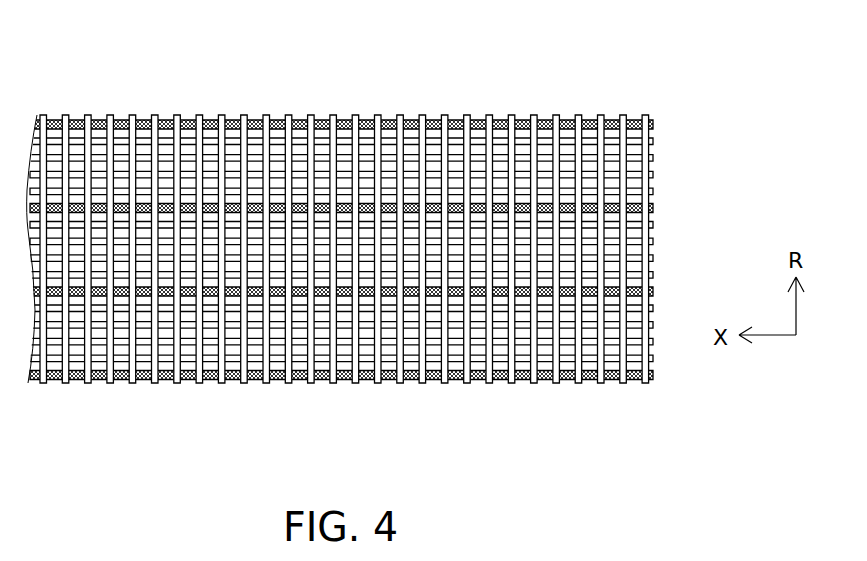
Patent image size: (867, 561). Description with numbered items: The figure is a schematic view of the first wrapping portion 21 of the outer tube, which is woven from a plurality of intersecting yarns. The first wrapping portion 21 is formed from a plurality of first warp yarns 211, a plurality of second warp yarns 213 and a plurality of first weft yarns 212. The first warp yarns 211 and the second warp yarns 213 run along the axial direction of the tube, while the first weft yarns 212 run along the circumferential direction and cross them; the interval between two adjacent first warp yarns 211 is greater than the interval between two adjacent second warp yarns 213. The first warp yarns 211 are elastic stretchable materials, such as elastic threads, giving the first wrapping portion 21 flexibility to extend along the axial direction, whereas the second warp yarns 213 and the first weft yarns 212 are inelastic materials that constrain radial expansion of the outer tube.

The first wrapping portion 21 is at (408, 246).
The first warp yarns 211 is at (587, 200).
The first weft yarns 212 is at (220, 118).
The second warp yarns 213 is at (632, 158).